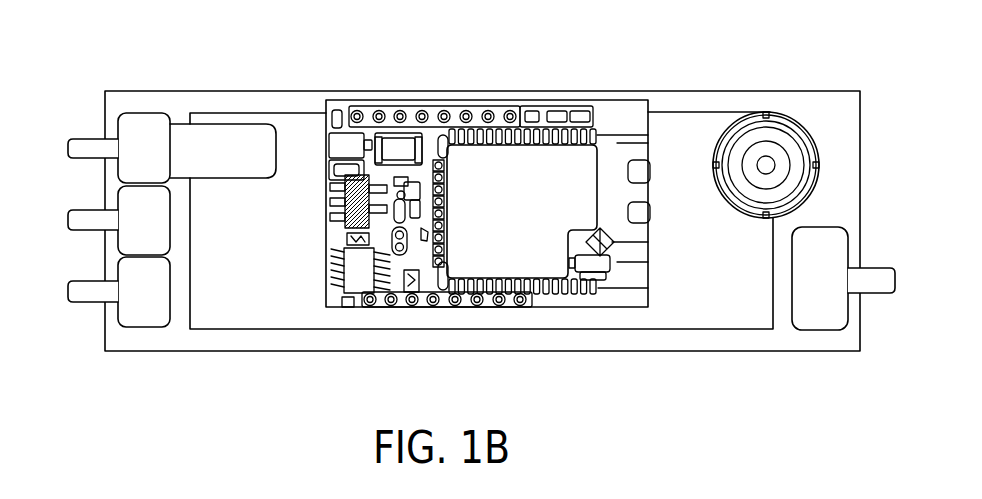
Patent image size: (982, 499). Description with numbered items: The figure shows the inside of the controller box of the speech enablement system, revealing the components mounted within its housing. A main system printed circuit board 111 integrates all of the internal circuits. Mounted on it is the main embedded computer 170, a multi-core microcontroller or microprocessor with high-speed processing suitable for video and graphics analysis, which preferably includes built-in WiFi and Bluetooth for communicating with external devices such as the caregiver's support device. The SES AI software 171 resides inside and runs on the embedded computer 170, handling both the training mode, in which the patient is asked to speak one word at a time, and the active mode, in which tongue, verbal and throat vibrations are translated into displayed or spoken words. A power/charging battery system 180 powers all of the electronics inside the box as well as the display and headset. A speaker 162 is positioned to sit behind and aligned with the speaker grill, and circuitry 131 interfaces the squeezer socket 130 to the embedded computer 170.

The main system printed circuit board 111 is at (272, 100).
The squeezer socket 130 is at (86, 138).
The circuitry 131 is at (229, 142).
The embedded computer 170 is at (582, 118).
The SES AI software 171 is at (488, 160).
The power/charging battery system 180 is at (678, 122).
The speaker 162 is at (795, 115).